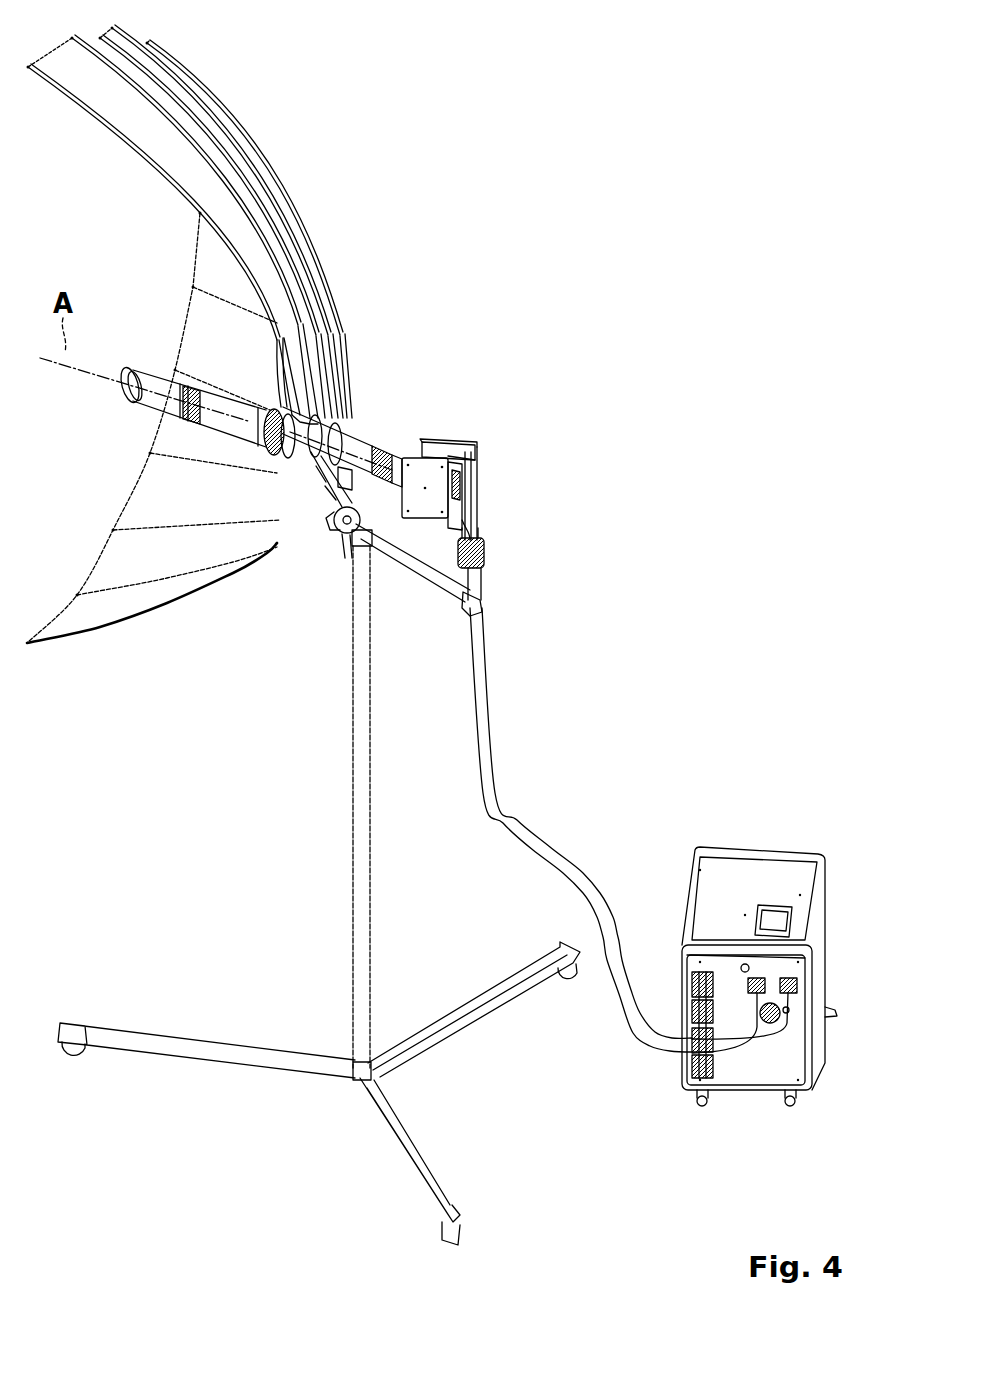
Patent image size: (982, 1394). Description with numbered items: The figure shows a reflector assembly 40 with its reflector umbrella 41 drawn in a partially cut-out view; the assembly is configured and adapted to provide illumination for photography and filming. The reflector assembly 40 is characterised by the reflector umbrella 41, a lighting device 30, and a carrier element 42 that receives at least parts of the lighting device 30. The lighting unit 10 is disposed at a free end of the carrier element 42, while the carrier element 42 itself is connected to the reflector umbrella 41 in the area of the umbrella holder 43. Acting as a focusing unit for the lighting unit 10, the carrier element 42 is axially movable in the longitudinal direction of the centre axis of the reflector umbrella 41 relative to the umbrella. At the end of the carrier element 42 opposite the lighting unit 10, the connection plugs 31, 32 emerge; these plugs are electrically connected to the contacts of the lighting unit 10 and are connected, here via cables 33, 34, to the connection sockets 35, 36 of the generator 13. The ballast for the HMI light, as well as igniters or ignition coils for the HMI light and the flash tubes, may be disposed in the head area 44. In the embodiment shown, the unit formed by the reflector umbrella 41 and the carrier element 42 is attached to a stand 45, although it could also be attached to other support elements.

The lighting unit 10 is at (151, 360).
The generator 13 is at (759, 922).
The lighting device 30 is at (547, 830).
The connection plug 31 is at (484, 580).
The connection plug 32 is at (486, 560).
The cable 33 is at (477, 737).
The cable 34 is at (496, 693).
The connection socket 35 is at (756, 977).
The connection socket 36 is at (787, 977).
The reflector assembly 40 is at (636, 148).
The reflector umbrella 41 is at (242, 137).
The carrier element 42 is at (375, 425).
The umbrella holder 43 is at (346, 401).
The head area 44 is at (456, 434).
The stand 45 is at (347, 683).